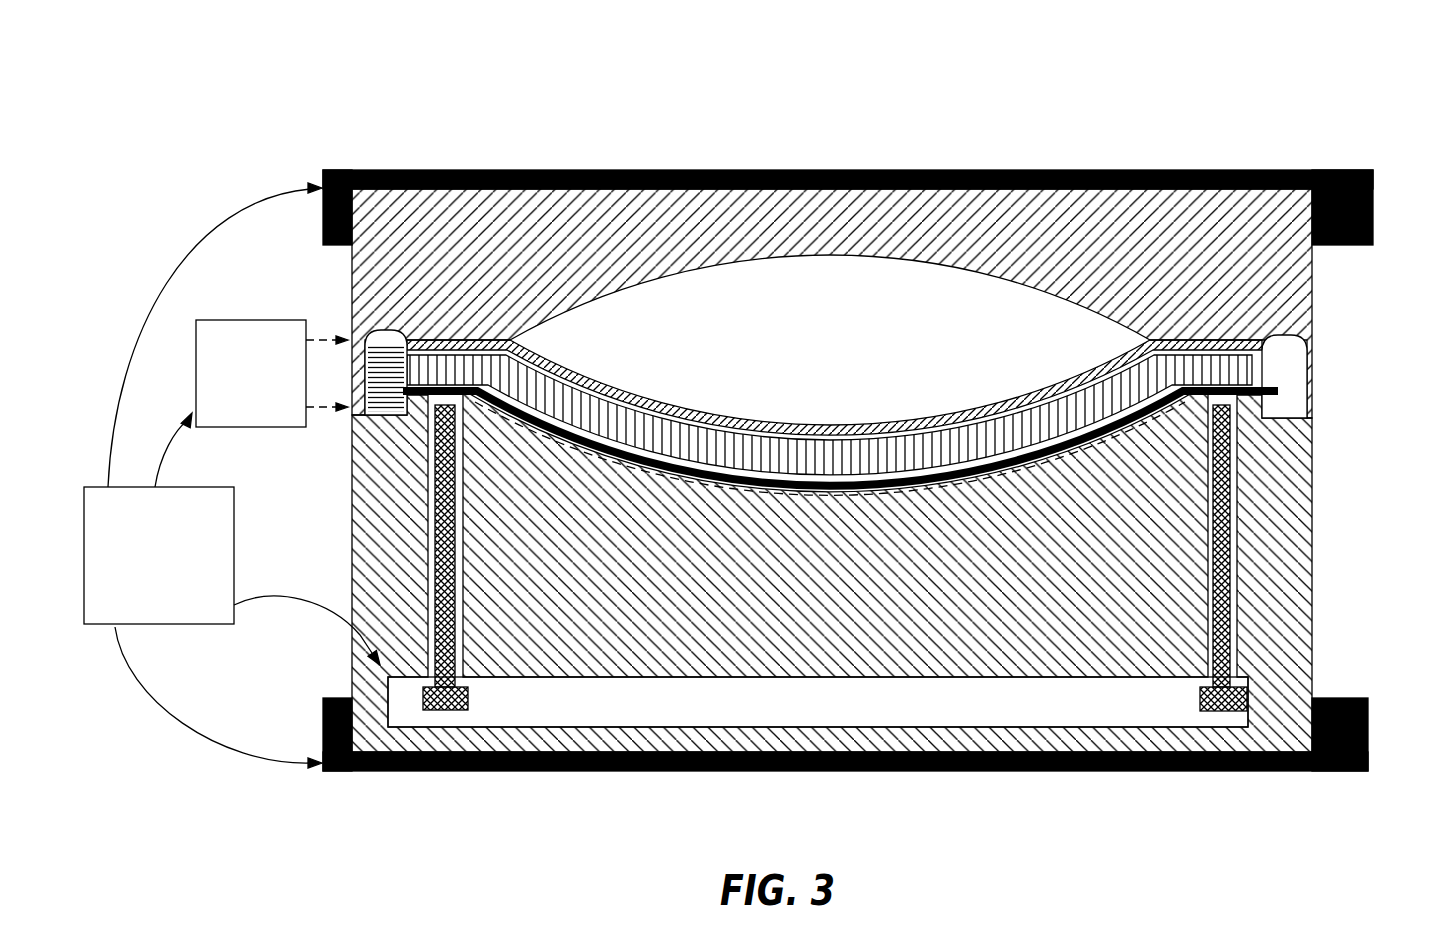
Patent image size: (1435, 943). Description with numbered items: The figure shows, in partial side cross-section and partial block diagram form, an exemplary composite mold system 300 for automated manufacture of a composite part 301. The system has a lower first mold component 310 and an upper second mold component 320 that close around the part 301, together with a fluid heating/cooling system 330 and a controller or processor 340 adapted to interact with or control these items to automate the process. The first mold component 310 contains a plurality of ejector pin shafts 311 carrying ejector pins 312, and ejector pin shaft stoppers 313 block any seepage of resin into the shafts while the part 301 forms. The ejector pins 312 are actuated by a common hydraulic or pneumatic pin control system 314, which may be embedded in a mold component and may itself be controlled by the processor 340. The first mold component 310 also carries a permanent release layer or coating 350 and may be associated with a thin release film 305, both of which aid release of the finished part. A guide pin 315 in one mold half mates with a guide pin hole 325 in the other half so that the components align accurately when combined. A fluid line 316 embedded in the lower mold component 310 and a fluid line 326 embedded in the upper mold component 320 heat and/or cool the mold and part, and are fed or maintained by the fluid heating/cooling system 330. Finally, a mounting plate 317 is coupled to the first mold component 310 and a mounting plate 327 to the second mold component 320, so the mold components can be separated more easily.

The composite mold system 300 is at (237, 112).
The composite part 301 is at (850, 473).
The thin release film 305 is at (1305, 357).
The first mold component 310 is at (755, 650).
The ejector pin shaft 311 is at (1215, 660).
The ejector pin 312 is at (1230, 700).
The ejector pin shaft stopper 313 is at (1293, 409).
The pin control system 314 is at (846, 713).
The guide pin 315 is at (1305, 470).
The fluid line 316 is at (640, 485).
The mounting plate 317 is at (955, 772).
The second mold component 320 is at (895, 170).
The guide pin hole 325 is at (410, 332).
The fluid line 326 is at (1075, 380).
The mounting plate 327 is at (712, 170).
The fluid heating/cooling system 330 is at (272, 373).
The processor 340 is at (232, 475).
The permanent release layer 350 is at (1293, 383).